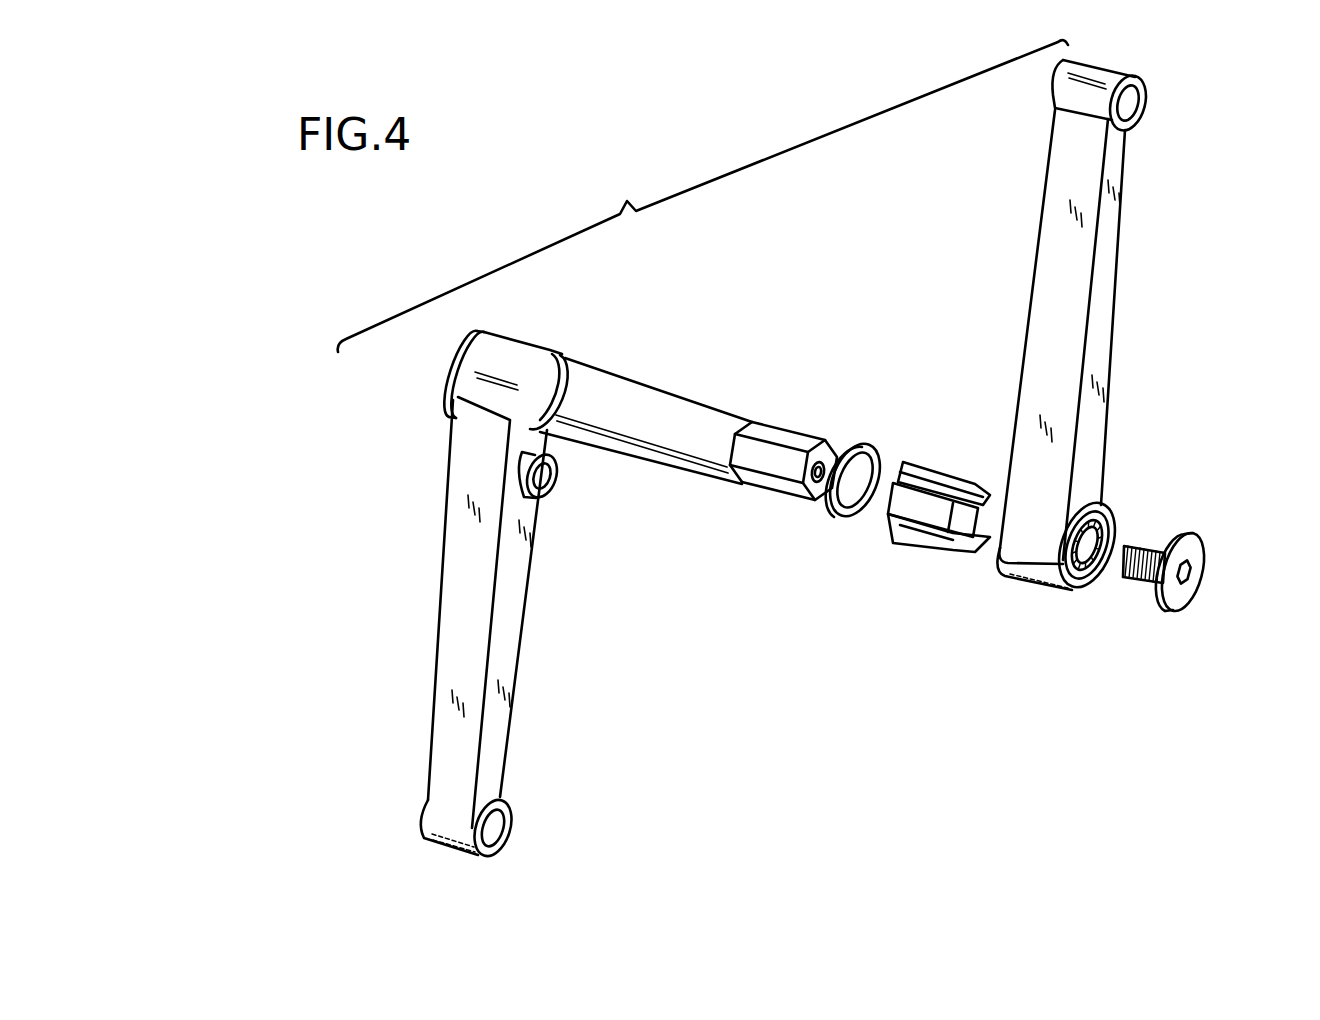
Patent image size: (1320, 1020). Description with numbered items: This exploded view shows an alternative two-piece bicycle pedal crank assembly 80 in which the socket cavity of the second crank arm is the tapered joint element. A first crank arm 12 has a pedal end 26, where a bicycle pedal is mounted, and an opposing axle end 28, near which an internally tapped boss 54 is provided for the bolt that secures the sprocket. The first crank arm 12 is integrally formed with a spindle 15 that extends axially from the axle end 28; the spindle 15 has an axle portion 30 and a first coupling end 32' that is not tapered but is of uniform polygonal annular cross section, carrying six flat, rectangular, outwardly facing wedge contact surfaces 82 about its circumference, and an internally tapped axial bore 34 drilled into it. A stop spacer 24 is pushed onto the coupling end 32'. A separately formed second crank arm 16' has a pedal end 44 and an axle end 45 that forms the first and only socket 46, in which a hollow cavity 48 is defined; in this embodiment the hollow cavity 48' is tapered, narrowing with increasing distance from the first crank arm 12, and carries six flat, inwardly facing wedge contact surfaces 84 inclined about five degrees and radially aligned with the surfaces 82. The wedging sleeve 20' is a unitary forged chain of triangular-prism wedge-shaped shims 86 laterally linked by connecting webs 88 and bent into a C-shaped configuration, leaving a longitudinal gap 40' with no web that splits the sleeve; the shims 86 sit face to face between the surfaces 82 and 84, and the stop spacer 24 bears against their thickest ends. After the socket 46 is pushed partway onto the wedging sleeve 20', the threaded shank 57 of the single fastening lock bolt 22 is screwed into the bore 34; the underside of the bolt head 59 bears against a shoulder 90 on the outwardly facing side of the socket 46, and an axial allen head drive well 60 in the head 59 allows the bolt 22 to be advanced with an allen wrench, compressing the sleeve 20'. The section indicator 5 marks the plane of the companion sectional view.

The two-piece bicycle pedal crank assembly 80 is at (622, 196).
The section view indicator 5 is at (426, 333).
The first crank arm 12 is at (484, 596).
The axle end 28 is at (480, 415).
The internally tapped boss 54 is at (554, 490).
The pedal end 26 is at (445, 822).
The spindle 15 is at (700, 437).
The axle portion 30 is at (660, 452).
The wedge contact surfaces 82 is at (785, 420).
The first coupling end 32' is at (791, 444).
The internally tapped axial bore 34 is at (820, 485).
The stop spacer 24 is at (867, 440).
The wedging sleeve 20' is at (906, 486).
The connecting webs 88 is at (928, 478).
The longitudinal gap 40' is at (885, 544).
The wedge-shaped shims 86 is at (902, 488).
The second crank arm 16' is at (1058, 354).
The pedal end 44 is at (1075, 122).
The axle end 45 is at (1018, 538).
The first socket 46 is at (1016, 577).
The wedge contact surfaces 84 is at (1054, 576).
The hollow cavity 48 is at (1084, 582).
The shoulder 90 is at (1100, 527).
The hollow cavity 48' is at (1043, 502).
The fastening lock bolt 22 is at (1186, 561).
The threaded shank 57 is at (1141, 583).
The bolt head 59 is at (1200, 549).
The axial allen head drive well 60 is at (1190, 580).